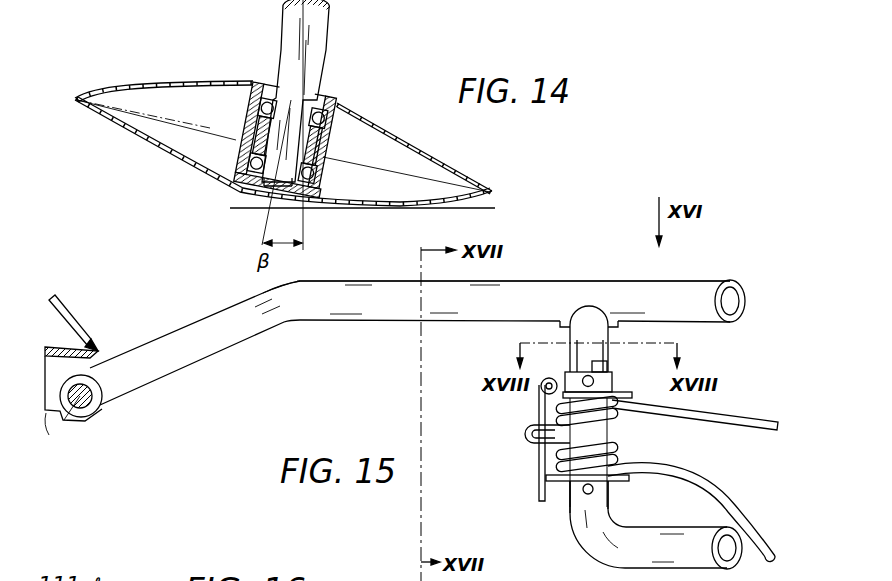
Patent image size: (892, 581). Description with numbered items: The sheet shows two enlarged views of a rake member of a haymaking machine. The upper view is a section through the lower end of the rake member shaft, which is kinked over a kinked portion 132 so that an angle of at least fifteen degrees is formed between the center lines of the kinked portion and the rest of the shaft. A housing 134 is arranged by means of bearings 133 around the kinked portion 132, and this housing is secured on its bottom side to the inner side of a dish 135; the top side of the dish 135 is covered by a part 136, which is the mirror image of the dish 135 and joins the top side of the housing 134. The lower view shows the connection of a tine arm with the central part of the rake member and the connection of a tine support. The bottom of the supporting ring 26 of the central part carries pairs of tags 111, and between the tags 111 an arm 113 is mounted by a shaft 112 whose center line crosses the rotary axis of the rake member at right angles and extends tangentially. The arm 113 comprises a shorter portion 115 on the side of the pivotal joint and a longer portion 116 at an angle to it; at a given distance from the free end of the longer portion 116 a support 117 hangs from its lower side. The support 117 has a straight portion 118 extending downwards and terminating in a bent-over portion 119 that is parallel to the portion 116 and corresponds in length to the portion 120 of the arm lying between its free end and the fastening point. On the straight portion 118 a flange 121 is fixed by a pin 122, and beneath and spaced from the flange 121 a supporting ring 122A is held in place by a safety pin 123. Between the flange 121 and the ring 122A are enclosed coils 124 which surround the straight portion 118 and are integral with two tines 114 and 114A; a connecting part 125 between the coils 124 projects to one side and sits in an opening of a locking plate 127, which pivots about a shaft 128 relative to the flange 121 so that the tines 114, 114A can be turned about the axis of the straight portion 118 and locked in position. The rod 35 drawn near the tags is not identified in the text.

In FIG. 14, the kinked portion 132 is at (318, 40).
In FIG. 14, the bearings 133 is at (336, 117).
In FIG. 14, the housing 134 is at (326, 165).
In FIG. 14, the dish 135 is at (150, 153).
In FIG. 14, the part 136 is at (197, 68).
In FIG. 15, the shaft 35 is at (69, 318).
In FIG. 15, the supporting ring 26 is at (98, 352).
In FIG. 15, the tags 111 is at (70, 406).
In FIG. 15, the shaft 112 is at (102, 408).
In FIG. 15, the arm 113 is at (287, 322).
In FIG. 15, the tine 114 is at (768, 393).
In FIG. 15, the tine 114A is at (760, 476).
In FIG. 15, the shorter portion 115 is at (198, 323).
In FIG. 15, the longer portion 116 is at (551, 281).
In FIG. 15, the support 117 is at (578, 534).
In FIG. 15, the straight portion 118 is at (610, 300).
In FIG. 15, the bent-over portion 119 is at (672, 569).
In FIG. 15, the portion 120 is at (717, 268).
In FIG. 15, the flange 121 is at (604, 393).
In FIG. 15, the pin 122 is at (598, 364).
In FIG. 15, the supporting ring 122A is at (618, 485).
In FIG. 15, the lower plate 123 is at (582, 490).
In FIG. 15, the coils 124 is at (630, 420).
In FIG. 15, the connecting part 125 is at (525, 433).
In FIG. 15, the locking plate 127 is at (539, 462).
In FIG. 15, the shaft 128 is at (543, 389).